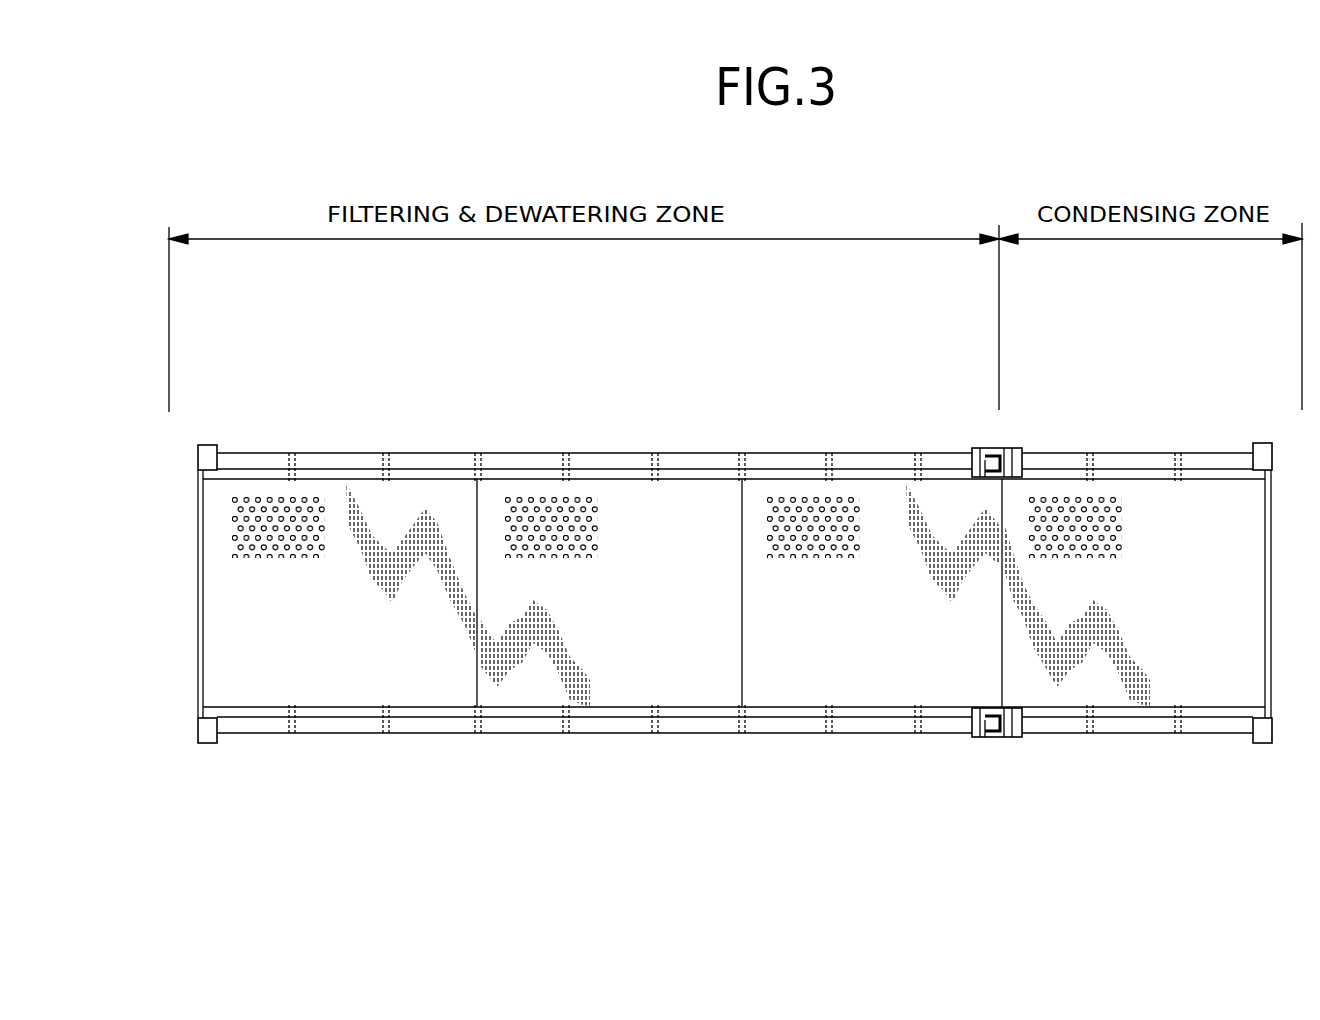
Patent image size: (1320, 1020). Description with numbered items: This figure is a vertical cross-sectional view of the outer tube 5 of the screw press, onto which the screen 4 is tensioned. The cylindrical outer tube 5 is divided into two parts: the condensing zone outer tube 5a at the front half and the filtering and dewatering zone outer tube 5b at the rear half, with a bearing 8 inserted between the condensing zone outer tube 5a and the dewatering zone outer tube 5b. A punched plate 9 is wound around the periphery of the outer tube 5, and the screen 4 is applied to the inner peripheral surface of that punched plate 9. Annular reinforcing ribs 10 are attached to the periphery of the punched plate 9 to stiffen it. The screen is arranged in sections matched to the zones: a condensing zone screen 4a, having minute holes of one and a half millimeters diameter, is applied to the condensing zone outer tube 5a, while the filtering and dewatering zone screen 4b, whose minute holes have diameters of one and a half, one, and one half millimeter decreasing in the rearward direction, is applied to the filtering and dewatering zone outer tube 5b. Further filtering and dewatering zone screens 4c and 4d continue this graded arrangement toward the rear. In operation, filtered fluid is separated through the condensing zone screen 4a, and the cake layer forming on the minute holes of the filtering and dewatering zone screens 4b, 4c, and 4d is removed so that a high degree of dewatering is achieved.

The screen 4 is at (734, 588).
The condensing zone screen 4a is at (1139, 698).
The filtering and dewatering zone screen 4b is at (794, 698).
The filtering and dewatering zone screen 4c is at (528, 698).
The filtering and dewatering zone screen 4d is at (254, 698).
The outer tube 5 is at (735, 516).
The condensing zone outer tube 5a is at (1120, 453).
The filtering and dewatering zone outer tube 5b is at (265, 453).
The bearing 8 is at (1000, 738).
The punched plate 9 is at (428, 462).
The annular reinforcing ribs 10 is at (577, 452).